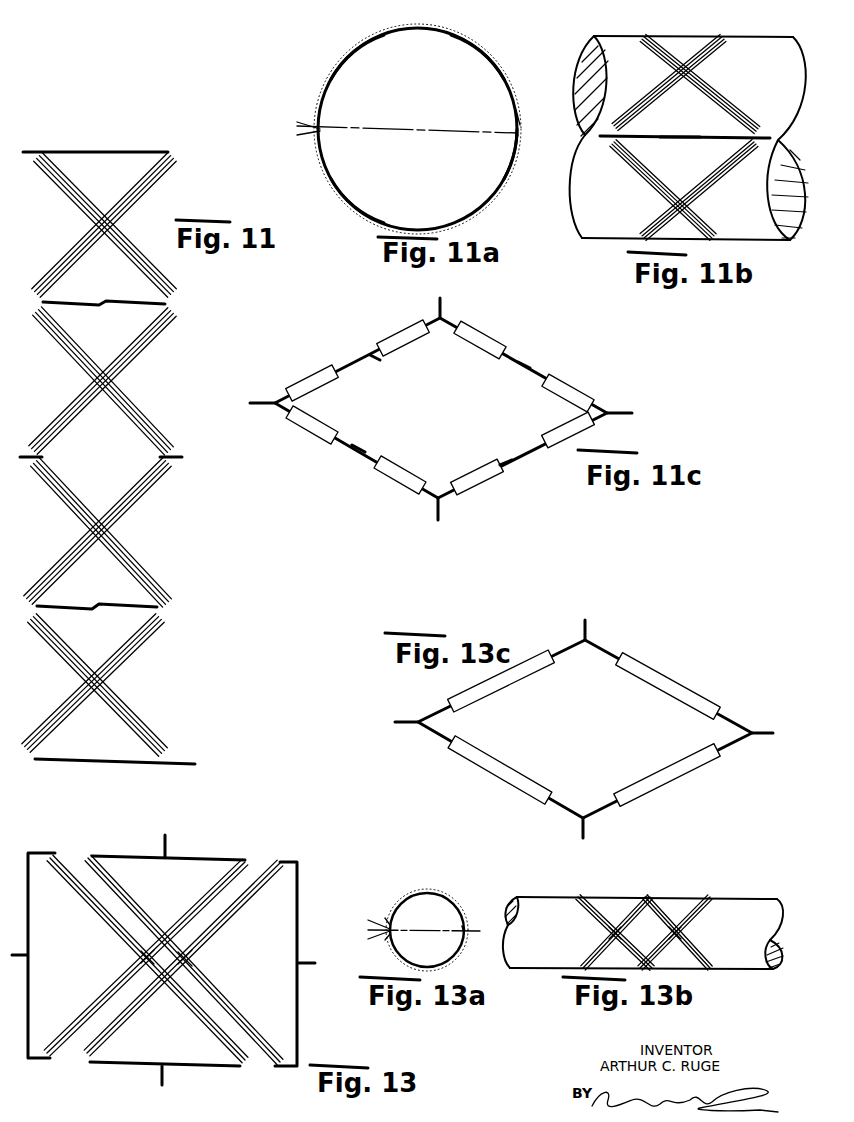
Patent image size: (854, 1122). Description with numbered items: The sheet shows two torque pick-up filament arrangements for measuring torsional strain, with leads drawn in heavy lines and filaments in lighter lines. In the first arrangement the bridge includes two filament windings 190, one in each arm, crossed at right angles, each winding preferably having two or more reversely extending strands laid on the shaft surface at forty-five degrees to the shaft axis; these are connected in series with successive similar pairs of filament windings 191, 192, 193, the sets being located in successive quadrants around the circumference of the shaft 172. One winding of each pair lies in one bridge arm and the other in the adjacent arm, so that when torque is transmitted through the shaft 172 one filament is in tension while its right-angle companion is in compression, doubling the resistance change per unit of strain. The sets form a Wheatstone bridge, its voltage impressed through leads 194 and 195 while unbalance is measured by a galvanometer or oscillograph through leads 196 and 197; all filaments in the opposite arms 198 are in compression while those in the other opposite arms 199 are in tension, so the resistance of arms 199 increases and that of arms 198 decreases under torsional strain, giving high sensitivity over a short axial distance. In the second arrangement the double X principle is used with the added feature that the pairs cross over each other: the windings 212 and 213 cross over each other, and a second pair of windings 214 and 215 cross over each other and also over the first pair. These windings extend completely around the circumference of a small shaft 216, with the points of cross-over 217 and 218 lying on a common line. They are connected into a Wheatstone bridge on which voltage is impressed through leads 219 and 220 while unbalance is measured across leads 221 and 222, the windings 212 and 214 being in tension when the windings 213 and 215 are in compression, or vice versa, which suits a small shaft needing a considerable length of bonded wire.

In FIG. 11A, the shaft 172 is at (497, 165).
In FIG. 11, the filament windings 190 is at (147, 202).
In FIG. 11A, the filament windings 190 is at (492, 62).
In FIG. 11B, the filament windings 190 is at (712, 96).
In FIG. 11C, the filament windings 190 is at (318, 422).
In FIG. 11, the filament windings 191 is at (145, 357).
In FIG. 11A, the filament windings 191 is at (367, 40).
In FIG. 11C, the filament windings 191 is at (389, 346).
In FIG. 11, the filament windings 192 is at (141, 508).
In FIG. 11A, the filament windings 192 is at (336, 188).
In FIG. 11C, the filament windings 192 is at (484, 334).
In FIG. 11, the filament windings 193 is at (138, 655).
In FIG. 11A, the filament windings 193 is at (518, 132).
In FIG. 11B, the filament windings 193 is at (714, 177).
In FIG. 11C, the filament windings 193 is at (560, 432).
In FIG. 11, the lead 194 is at (26, 156).
In FIG. 11A, the lead 194 is at (518, 117).
In FIG. 11B, the lead 194 is at (675, 137).
In FIG. 11C, the lead 194 is at (262, 405).
In FIG. 11, the lead 195 is at (180, 762).
In FIG. 11A, the lead 195 is at (519, 126).
In FIG. 11B, the lead 195 is at (690, 138).
In FIG. 11C, the lead 195 is at (615, 412).
In FIG. 11, the lead 196 is at (180, 457).
In FIG. 11A, the lead 196 is at (320, 133).
In FIG. 11C, the lead 196 is at (440, 510).
In FIG. 11, the lead 197 is at (22, 455).
In FIG. 11A, the lead 197 is at (318, 124).
In FIG. 11C, the lead 197 is at (440, 302).
In FIG. 11C, the opposite bridge arms 198 is at (367, 343).
In FIG. 11C, the opposite bridge arms 199 is at (530, 351).
In FIG. 13C, the winding 212 is at (688, 762).
In FIG. 13, the winding 212 is at (222, 998).
In FIG. 13B, the winding 212 is at (698, 965).
In FIG. 13C, the winding 213 is at (648, 680).
In FIG. 13, the winding 213 is at (238, 912).
In FIG. 13B, the winding 213 is at (700, 903).
In FIG. 13C, the winding 214 is at (537, 663).
In FIG. 13, the winding 214 is at (117, 933).
In FIG. 13B, the winding 214 is at (590, 897).
In FIG. 13C, the winding 215 is at (513, 775).
In FIG. 13, the winding 215 is at (115, 990).
In FIG. 13B, the winding 215 is at (588, 962).
In FIG. 13A, the shaft 216 is at (445, 916).
In FIG. 13B, the shaft 216 is at (541, 912).
In FIG. 13, the point of cross-over 217 is at (190, 960).
In FIG. 13B, the point of cross-over 217 is at (680, 934).
In FIG. 13, the point of cross-over 218 is at (144, 959).
In FIG. 13A, the point of cross-over 218 is at (462, 928).
In FIG. 13B, the point of cross-over 218 is at (612, 935).
In FIG. 13C, the lead 219 is at (405, 720).
In FIG. 13, the lead 219 is at (26, 955).
In FIG. 13C, the lead 220 is at (765, 730).
In FIG. 13, the lead 220 is at (308, 962).
In FIG. 13C, the lead 221 is at (585, 830).
In FIG. 13, the lead 221 is at (165, 840).
In FIG. 13A, the lead 221 is at (385, 918).
In FIG. 13C, the lead 222 is at (590, 633).
In FIG. 13, the lead 222 is at (162, 1076).
In FIG. 13A, the lead 222 is at (385, 940).